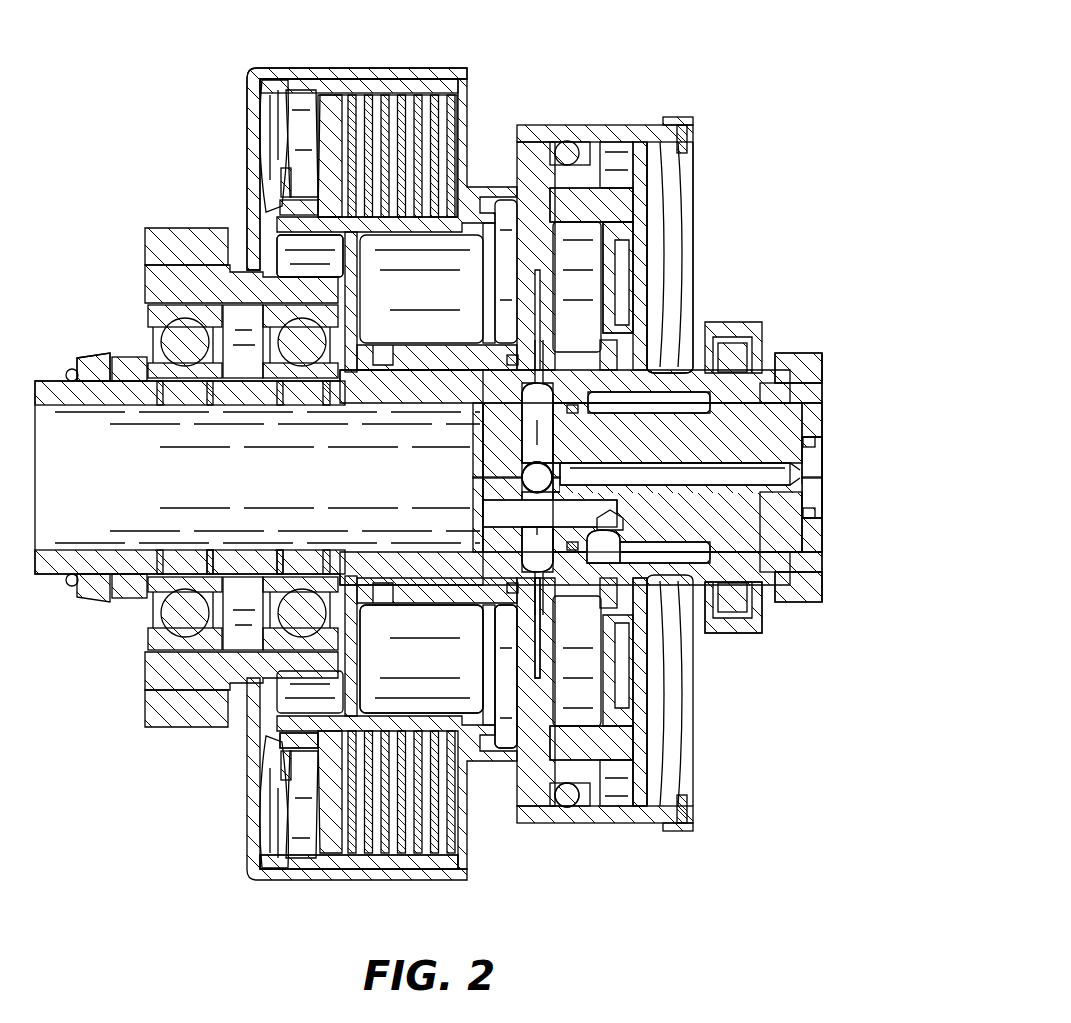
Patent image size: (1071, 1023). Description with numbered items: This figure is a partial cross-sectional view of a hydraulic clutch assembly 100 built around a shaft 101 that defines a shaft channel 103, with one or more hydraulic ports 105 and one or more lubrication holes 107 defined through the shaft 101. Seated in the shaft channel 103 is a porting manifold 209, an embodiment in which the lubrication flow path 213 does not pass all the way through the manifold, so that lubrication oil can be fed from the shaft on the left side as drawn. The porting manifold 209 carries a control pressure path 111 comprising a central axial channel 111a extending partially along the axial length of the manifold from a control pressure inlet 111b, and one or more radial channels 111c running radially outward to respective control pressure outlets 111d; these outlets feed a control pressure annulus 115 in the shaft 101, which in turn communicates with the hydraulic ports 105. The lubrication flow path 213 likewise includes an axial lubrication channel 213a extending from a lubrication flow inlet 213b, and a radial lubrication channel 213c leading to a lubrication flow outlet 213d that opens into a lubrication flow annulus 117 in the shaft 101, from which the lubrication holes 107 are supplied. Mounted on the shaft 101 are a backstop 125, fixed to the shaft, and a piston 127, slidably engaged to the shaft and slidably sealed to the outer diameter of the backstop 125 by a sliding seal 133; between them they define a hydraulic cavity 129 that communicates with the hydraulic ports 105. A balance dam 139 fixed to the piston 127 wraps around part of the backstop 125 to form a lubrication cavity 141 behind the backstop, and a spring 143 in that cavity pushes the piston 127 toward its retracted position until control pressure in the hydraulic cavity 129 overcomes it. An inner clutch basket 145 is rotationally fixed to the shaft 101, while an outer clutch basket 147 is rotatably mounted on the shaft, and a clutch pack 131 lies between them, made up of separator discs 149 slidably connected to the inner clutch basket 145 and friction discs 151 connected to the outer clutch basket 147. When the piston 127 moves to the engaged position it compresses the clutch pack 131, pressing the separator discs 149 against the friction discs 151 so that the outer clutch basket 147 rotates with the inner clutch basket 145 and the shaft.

The hydraulic clutch assembly 100 is at (541, 40).
The shaft 101 is at (62, 381).
The shaft channel 103 is at (130, 497).
The hydraulic port 105 is at (495, 607).
The lubrication hole 107 is at (605, 368).
The control pressure path 111 is at (813, 490).
The central axial channel 111a is at (782, 580).
The control pressure inlet 111b is at (820, 472).
The radial channel 111c is at (545, 437).
The control pressure outlet 111d is at (533, 418).
The control pressure annulus 115 is at (540, 548).
The lubrication flow annulus 117 is at (715, 620).
The backstop 125 is at (614, 764).
The piston 127 is at (537, 180).
The hydraulic cavity 129 is at (527, 637).
The clutch pack 131 is at (466, 124).
The sliding seal 133 is at (580, 800).
The balance dam 139 is at (628, 268).
The lubrication cavity 141 is at (577, 687).
The spring 143 is at (605, 210).
The inner clutch basket 145 is at (330, 257).
The outer clutch basket 147 is at (236, 67).
The separator disc 149 is at (325, 867).
The friction disc 151 is at (473, 873).
The porting manifold 209 is at (792, 522).
The lubrication flow path 213 is at (508, 519).
The axial lubrication channel 213a is at (531, 507).
The lubrication flow inlet 213b is at (492, 513).
The radial lubrication channel 213c is at (604, 520).
The lubrication flow outlet 213d is at (540, 640).